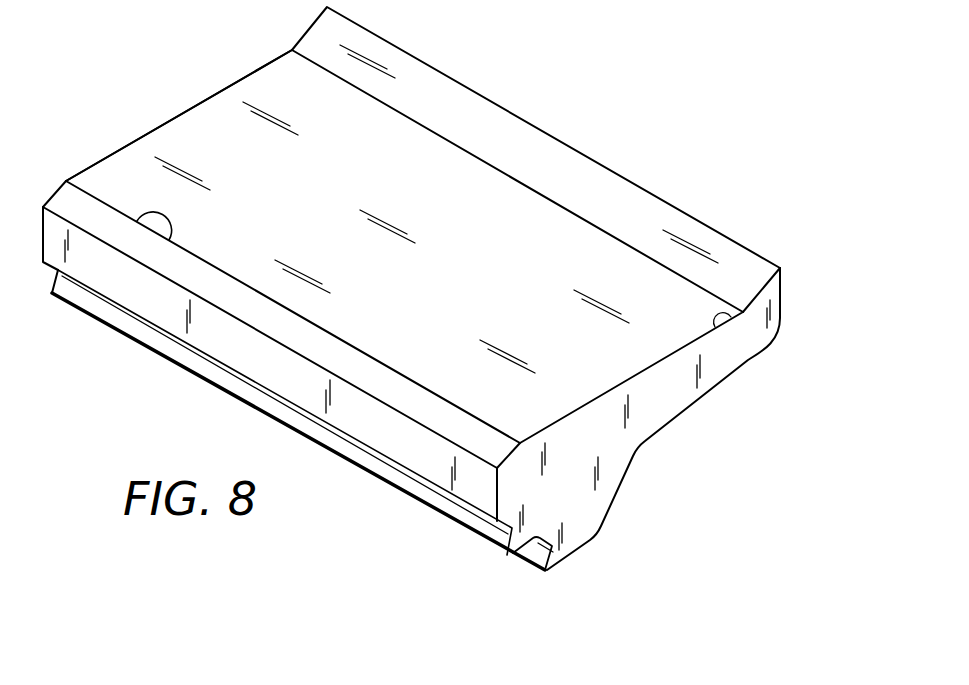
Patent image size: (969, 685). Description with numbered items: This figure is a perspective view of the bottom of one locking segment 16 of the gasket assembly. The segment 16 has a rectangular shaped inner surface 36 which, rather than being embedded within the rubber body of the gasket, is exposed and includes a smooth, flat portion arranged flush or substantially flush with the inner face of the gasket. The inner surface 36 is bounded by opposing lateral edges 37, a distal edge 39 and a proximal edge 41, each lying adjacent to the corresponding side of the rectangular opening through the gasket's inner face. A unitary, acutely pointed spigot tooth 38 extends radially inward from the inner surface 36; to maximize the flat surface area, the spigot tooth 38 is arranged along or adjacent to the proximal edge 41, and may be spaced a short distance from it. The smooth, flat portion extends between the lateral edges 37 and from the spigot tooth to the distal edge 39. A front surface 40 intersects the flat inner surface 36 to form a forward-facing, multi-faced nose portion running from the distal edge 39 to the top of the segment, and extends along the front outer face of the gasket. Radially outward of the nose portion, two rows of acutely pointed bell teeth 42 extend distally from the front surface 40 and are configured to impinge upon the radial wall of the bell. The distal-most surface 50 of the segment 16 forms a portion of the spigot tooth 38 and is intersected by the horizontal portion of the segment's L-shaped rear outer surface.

The segment 16 is at (157, 97).
The inner surface 36 is at (456, 295).
The lateral edges 37 is at (221, 88).
The spigot tooth 38 is at (743, 268).
The distal edge 39 is at (139, 224).
The front surface 40 is at (395, 482).
The proximal edge 41 is at (538, 127).
The bell teeth 42 is at (507, 556).
The distal-most surface 50 is at (782, 293).